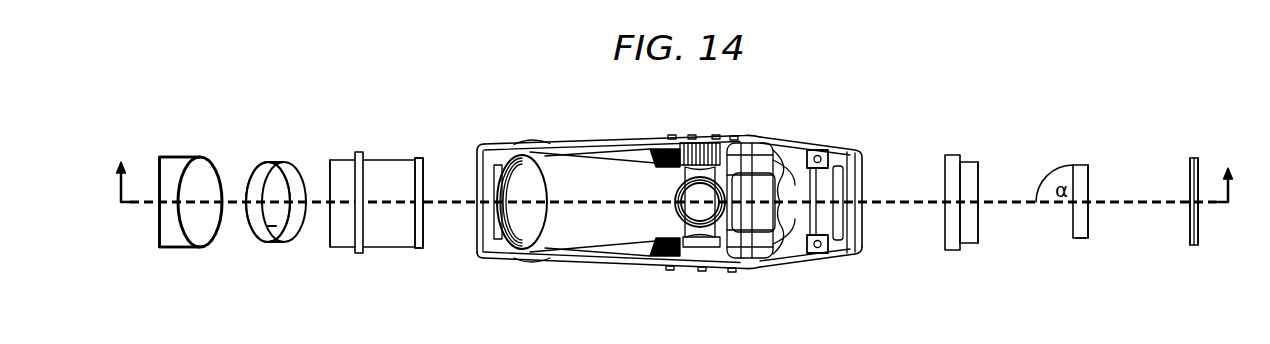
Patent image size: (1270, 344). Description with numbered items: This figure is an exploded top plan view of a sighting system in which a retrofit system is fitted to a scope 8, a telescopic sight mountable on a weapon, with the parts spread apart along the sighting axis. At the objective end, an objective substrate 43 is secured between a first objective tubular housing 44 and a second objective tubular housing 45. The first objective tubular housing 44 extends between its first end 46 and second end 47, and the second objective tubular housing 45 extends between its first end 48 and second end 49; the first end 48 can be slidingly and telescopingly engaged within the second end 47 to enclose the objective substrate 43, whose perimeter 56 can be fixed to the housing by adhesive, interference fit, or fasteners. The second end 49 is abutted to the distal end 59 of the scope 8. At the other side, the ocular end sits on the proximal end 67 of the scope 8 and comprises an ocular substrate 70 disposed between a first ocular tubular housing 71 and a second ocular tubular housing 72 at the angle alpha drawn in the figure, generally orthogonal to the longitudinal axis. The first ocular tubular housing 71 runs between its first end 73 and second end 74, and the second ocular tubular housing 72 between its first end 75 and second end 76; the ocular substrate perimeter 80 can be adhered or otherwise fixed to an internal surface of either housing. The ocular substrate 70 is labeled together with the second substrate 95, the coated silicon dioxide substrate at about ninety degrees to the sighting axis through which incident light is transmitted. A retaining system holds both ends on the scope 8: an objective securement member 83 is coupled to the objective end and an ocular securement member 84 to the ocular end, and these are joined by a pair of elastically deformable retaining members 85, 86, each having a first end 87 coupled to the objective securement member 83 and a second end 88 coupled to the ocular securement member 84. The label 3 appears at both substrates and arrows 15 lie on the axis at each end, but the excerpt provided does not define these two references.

The optical axis / lens element 3 is at (274, 226).
The scope 8 is at (580, 194).
The light direction arrow 15 is at (675, 165).
The objective substrate 43 is at (288, 172).
The first objective tubular housing 44 is at (171, 170).
The second objective tubular housing 45 is at (374, 172).
The first objective tubular housing first end 46 is at (159, 226).
The first objective tubular housing second end 47 is at (212, 163).
The second objective tubular housing first end 48 is at (332, 231).
The second objective tubular housing second end 49 is at (423, 175).
The objective substrate perimeter 56 is at (263, 176).
The distal end 59 is at (528, 170).
The proximal end 67 is at (838, 176).
The ocular substrate 70 is at (1078, 176).
The first ocular tubular housing 71 is at (1194, 158).
The second ocular tubular housing 72 is at (968, 173).
The first ocular tubular housing first end 73 is at (1199, 222).
The first ocular tubular housing second end 74 is at (1190, 238).
The second ocular tubular housing first end 75 is at (980, 224).
The second ocular tubular housing second end 76 is at (946, 241).
The ocular substrate perimeter 80 is at (1090, 187).
The objective securement member 83 is at (481, 150).
The ocular securement member 84 is at (858, 233).
The retaining member 85 is at (603, 266).
The retaining member 86 is at (594, 145).
The retaining member first end 87 is at (480, 258).
The retaining member second end 88 is at (855, 256).
The second substrate 95 is at (1079, 168).